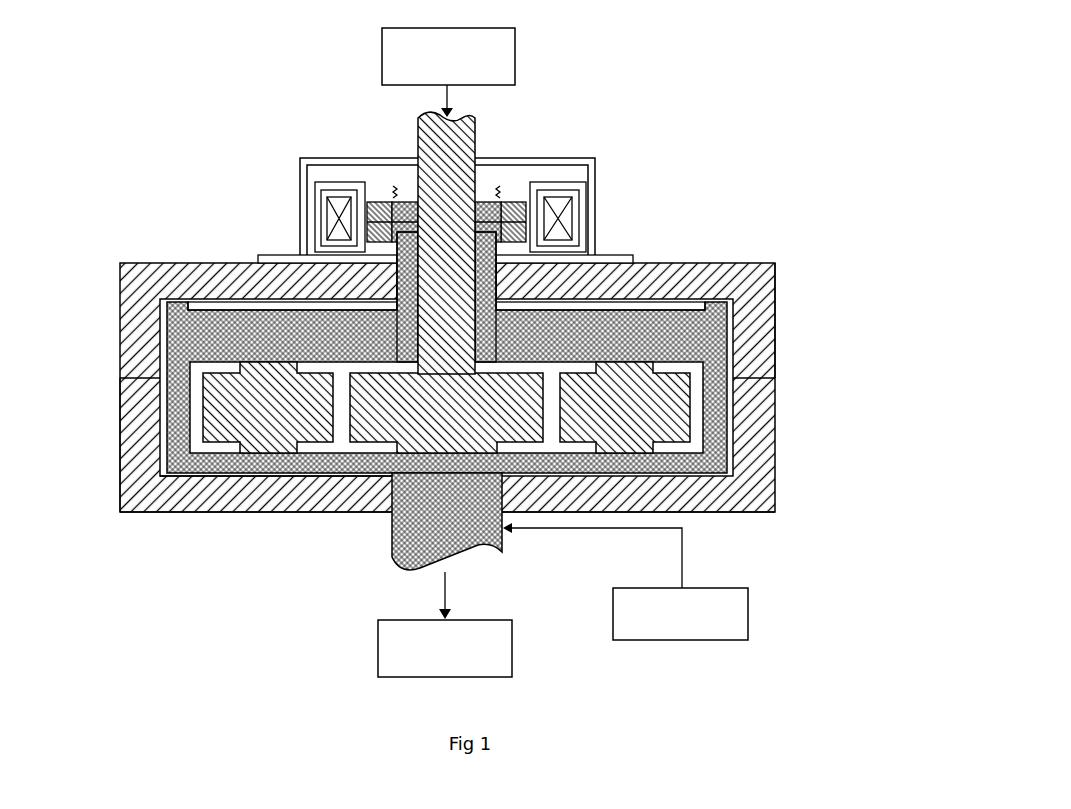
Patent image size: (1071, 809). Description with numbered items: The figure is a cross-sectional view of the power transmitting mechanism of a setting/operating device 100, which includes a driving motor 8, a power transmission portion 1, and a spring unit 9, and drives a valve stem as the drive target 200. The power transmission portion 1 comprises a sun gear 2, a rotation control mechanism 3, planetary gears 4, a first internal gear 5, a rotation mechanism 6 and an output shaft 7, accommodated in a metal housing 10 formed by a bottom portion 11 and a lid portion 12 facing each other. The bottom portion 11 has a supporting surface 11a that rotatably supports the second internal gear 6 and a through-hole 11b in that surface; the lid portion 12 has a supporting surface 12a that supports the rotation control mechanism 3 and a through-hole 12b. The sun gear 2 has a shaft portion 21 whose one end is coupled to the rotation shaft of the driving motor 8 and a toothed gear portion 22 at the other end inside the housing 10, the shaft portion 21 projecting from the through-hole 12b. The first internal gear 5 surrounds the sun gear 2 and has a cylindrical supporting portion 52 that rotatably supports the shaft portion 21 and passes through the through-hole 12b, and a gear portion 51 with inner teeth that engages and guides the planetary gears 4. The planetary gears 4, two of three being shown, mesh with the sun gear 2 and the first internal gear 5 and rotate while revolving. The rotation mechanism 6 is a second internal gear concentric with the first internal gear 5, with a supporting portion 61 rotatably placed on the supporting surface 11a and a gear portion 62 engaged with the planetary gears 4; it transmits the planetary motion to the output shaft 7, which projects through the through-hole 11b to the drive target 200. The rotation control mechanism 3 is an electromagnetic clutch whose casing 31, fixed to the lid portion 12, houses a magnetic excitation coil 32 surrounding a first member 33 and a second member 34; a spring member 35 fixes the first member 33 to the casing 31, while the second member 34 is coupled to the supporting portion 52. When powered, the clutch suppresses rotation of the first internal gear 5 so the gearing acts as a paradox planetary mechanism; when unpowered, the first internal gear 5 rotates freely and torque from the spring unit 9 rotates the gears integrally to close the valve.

The setting/operating device 100 is at (896, 53).
The power transmission portion 1 is at (790, 140).
The sun gear 2 is at (459, 332).
The shaft portion 21 is at (497, 302).
The gear portion 22 is at (545, 378).
The rotation control mechanism 3 is at (597, 156).
The casing 31 is at (300, 172).
The magnetic excitation coil 32 is at (557, 190).
The first member 33 is at (510, 202).
The second member 34 is at (335, 226).
The spring member 35 is at (392, 190).
The planetary gears 4 is at (215, 420).
The first internal gear 5 is at (376, 320).
The gear portion 51 is at (170, 342).
The supporting portion 52 is at (277, 290).
The rotation mechanism 6 is at (511, 430).
The supporting portion 61 is at (695, 498).
The gear portion 62 is at (715, 447).
The output shaft 7 is at (388, 542).
The driving motor 8 is at (517, 52).
The spring unit 9 is at (750, 614).
The housing 10 is at (482, 353).
The bottom portion 11 is at (766, 396).
The supporting surface 11a is at (152, 466).
The through-hole 11b is at (388, 515).
The lid portion 12 is at (766, 367).
The supporting surface 12a is at (762, 263).
The through-hole 12b is at (493, 287).
The drive target 200 is at (378, 643).